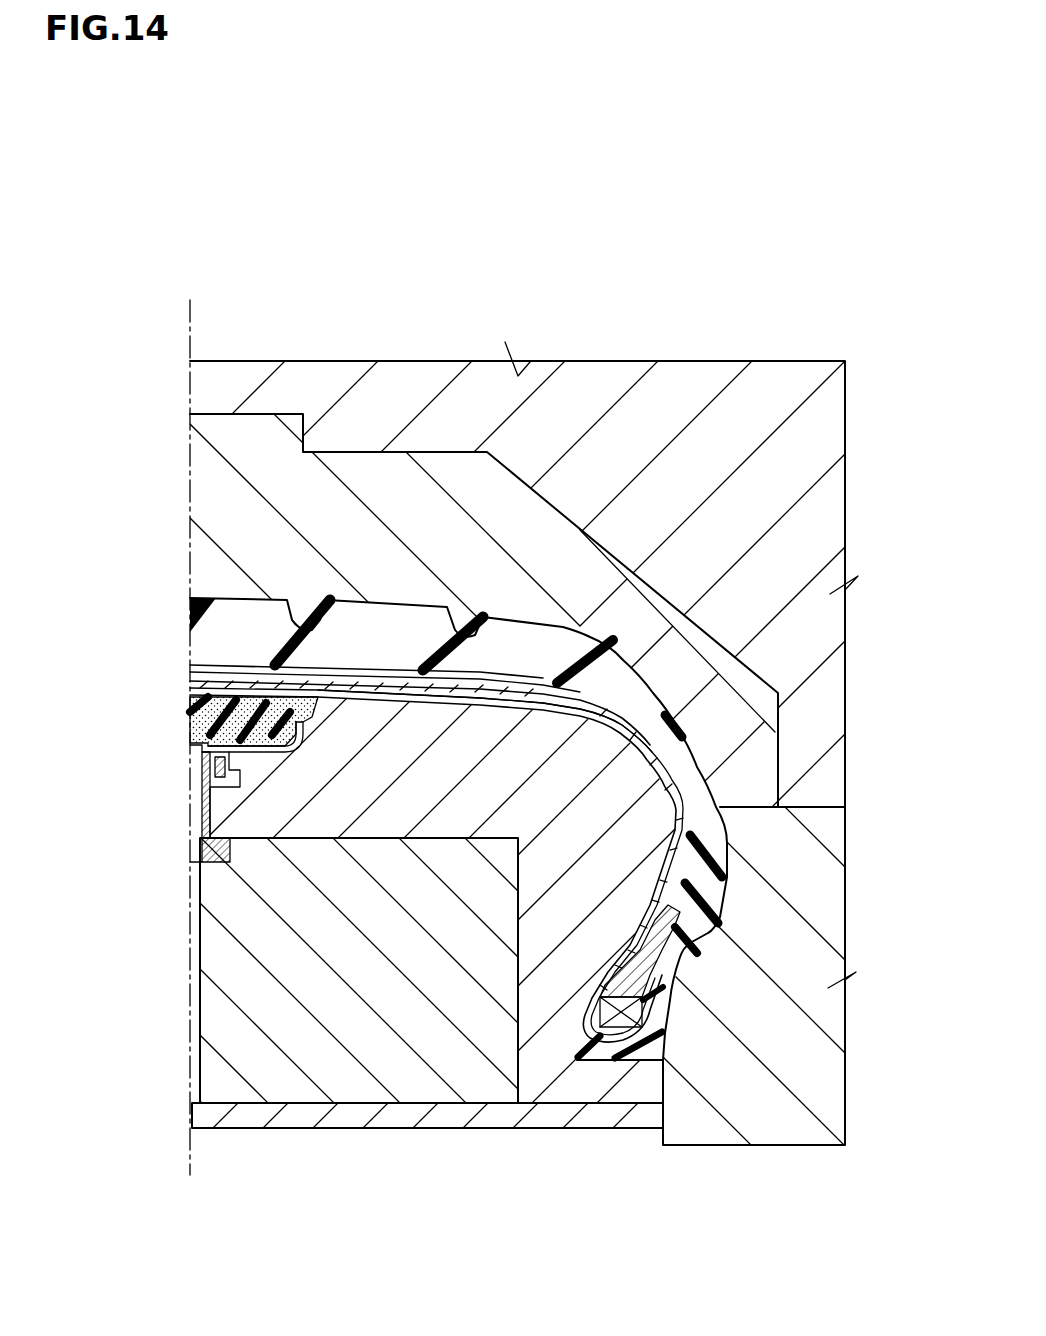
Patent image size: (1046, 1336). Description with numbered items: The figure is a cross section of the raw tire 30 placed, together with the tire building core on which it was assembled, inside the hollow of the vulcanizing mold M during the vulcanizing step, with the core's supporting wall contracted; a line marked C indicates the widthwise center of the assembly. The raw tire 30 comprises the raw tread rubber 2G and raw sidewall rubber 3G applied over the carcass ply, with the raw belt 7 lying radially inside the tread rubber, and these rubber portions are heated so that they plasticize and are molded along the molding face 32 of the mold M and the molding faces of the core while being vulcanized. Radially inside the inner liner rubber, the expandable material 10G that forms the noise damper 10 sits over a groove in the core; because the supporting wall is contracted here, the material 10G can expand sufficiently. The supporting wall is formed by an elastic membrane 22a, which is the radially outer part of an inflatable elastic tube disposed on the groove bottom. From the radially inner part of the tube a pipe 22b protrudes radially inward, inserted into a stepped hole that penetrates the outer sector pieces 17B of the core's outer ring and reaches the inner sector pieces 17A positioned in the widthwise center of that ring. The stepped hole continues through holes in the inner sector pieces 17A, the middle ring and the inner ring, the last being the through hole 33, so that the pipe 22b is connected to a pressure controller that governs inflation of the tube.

The vulcanizing mold M is at (652, 327).
The tire equator / center line C is at (187, 728).
The raw tread rubber 2G is at (563, 645).
The raw sidewall rubber 3G is at (698, 780).
The inner sector piece 17A is at (347, 1087).
The outer sector piece 17B is at (573, 1087).
The through hole 33 is at (213, 1107).
The raw tire 30 is at (218, 641).
The molding face 32 is at (190, 620).
The raw belt 7 is at (184, 671).
The noise damper 10 is at (207, 732).
The expandable material 10G is at (207, 707).
The pipe 22b is at (203, 802).
The elastic membrane 22a is at (204, 838).